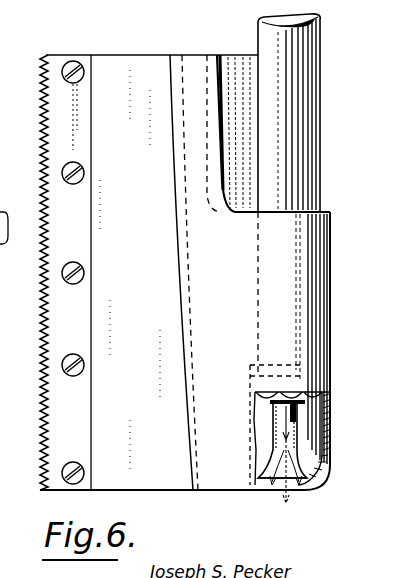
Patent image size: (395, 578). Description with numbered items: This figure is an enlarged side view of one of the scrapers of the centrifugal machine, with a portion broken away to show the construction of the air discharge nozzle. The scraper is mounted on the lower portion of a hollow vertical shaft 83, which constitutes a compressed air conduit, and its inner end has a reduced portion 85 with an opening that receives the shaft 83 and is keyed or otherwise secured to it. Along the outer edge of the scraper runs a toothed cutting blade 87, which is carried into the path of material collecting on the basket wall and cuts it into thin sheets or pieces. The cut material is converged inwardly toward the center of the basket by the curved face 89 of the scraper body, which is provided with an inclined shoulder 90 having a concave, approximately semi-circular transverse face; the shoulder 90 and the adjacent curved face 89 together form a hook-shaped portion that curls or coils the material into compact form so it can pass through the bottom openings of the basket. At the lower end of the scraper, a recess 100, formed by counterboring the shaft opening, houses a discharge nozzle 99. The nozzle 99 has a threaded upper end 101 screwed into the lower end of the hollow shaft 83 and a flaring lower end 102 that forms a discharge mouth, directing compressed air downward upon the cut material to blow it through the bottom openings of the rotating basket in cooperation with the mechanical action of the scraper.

The vertical shaft 83 is at (306, 94).
The reduced portion 85 is at (268, 259).
The toothed cutting blade 87 is at (42, 107).
The curved face 89 is at (185, 272).
The inclined shoulder 90 is at (173, 75).
The discharge nozzle 99 is at (300, 437).
The recess 100 is at (330, 393).
The threaded upper end 101 is at (272, 401).
The flaring lower end 102 is at (302, 470).